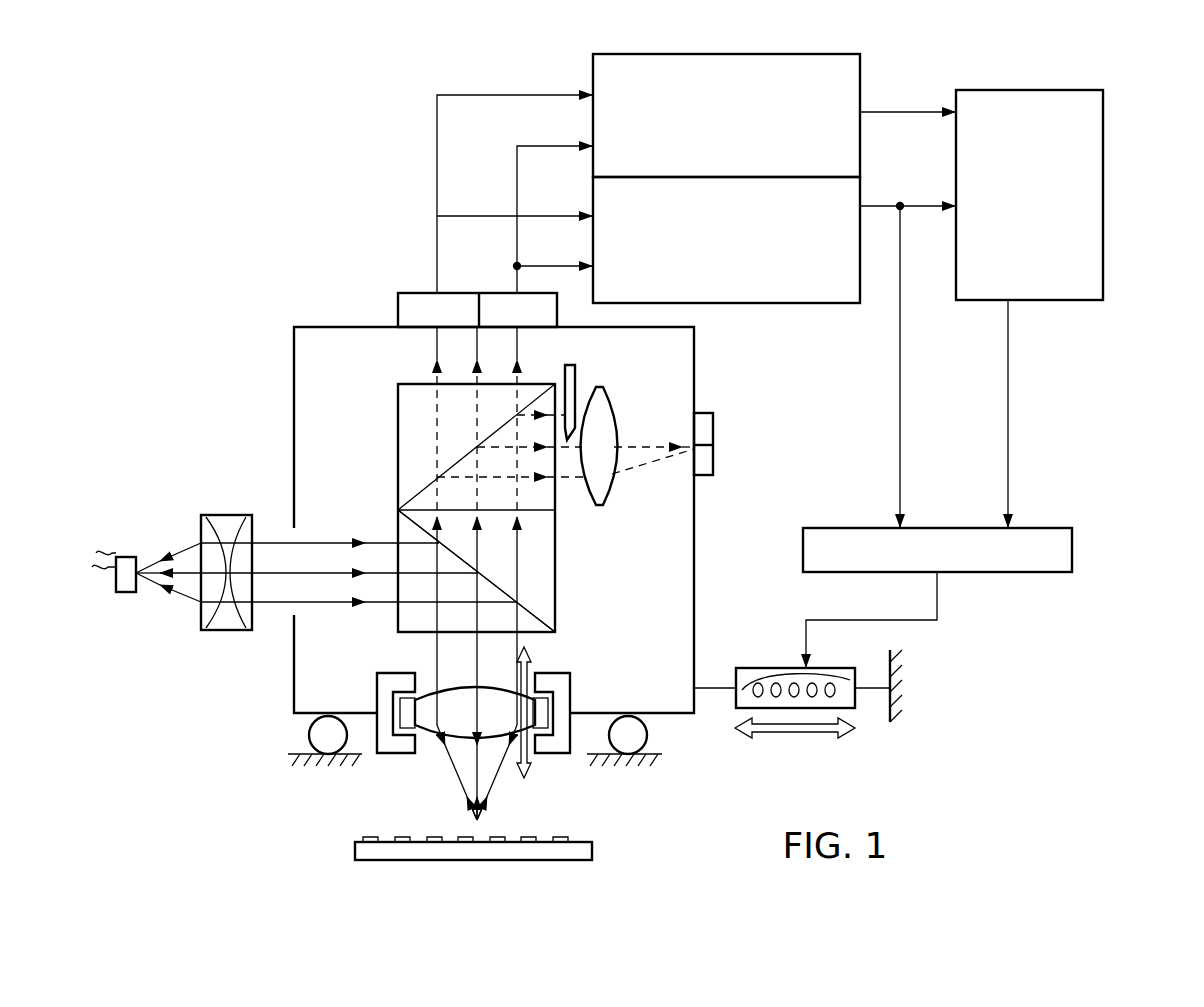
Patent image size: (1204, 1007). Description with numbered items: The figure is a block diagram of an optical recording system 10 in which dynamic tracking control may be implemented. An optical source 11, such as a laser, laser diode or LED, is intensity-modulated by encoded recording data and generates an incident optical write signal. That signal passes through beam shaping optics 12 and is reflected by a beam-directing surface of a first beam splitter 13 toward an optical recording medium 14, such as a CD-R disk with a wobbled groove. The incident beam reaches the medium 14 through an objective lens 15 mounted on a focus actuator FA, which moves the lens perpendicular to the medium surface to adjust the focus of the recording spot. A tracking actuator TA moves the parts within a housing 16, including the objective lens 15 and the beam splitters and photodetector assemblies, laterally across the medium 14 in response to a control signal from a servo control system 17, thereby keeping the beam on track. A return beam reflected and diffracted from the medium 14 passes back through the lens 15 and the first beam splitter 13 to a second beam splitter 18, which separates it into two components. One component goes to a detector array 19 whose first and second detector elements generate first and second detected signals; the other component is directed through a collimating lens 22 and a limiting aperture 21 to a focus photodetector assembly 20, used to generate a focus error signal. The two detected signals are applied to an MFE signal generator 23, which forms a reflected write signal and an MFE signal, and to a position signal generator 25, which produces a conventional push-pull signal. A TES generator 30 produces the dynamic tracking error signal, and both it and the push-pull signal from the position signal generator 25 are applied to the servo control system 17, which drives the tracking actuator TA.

The optical recording system 10 is at (345, 252).
The optical source 11 is at (127, 556).
The beam shaping optics 12 is at (222, 515).
The beam splitter 13 is at (556, 548).
The optical recording medium 14 is at (594, 848).
The objective lens 15 is at (436, 732).
The housing 16 is at (294, 374).
The servo control system 17 is at (1074, 549).
The second beam splitter 18 is at (398, 452).
The detector array 19 is at (418, 292).
The focus photodetector assembly 20 is at (715, 430).
The limiting aperture 21 is at (577, 373).
The collimating lens 22 is at (613, 490).
The MFE signal generator 23 is at (861, 86).
The position signal generator 25 is at (805, 304).
The TES generator 30 is at (1104, 98).
The tracking actuator TA is at (765, 668).
The focus actuator FA is at (553, 753).